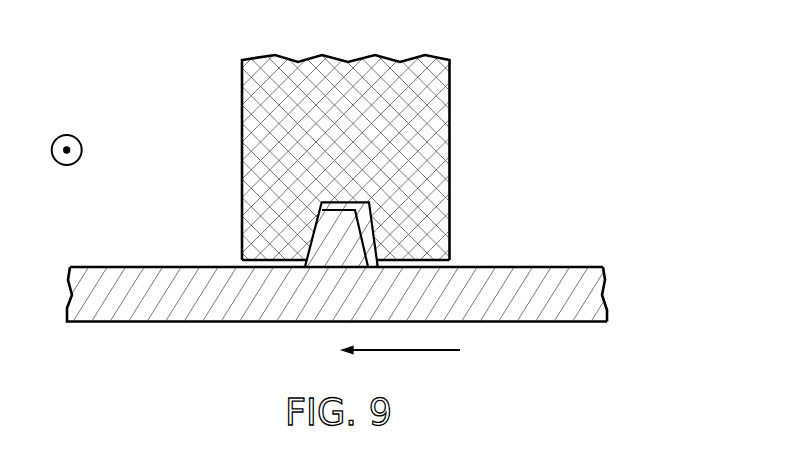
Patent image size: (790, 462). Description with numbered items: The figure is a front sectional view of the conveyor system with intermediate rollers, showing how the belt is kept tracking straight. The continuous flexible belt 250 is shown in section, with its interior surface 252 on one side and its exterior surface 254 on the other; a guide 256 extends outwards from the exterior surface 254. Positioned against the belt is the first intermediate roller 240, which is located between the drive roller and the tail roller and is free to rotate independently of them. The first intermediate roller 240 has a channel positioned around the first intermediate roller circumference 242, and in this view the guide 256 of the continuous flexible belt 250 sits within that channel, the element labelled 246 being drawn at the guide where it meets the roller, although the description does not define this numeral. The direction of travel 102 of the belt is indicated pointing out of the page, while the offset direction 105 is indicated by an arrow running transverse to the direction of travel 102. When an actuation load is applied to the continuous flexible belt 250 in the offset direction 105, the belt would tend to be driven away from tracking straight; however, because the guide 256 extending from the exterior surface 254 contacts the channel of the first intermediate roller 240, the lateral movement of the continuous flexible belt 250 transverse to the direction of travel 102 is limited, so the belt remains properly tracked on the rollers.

The first intermediate roller 240 is at (518, 79).
The first intermediate roller circumference 242 is at (428, 261).
The protruding feature 246 is at (377, 212).
The guide 256 is at (368, 243).
The continuous flexible belt 250 is at (604, 260).
The interior surface 252 is at (120, 322).
The exterior surface 254 is at (100, 267).
The direction of travel 102 is at (65, 136).
The offset direction 105 is at (417, 352).